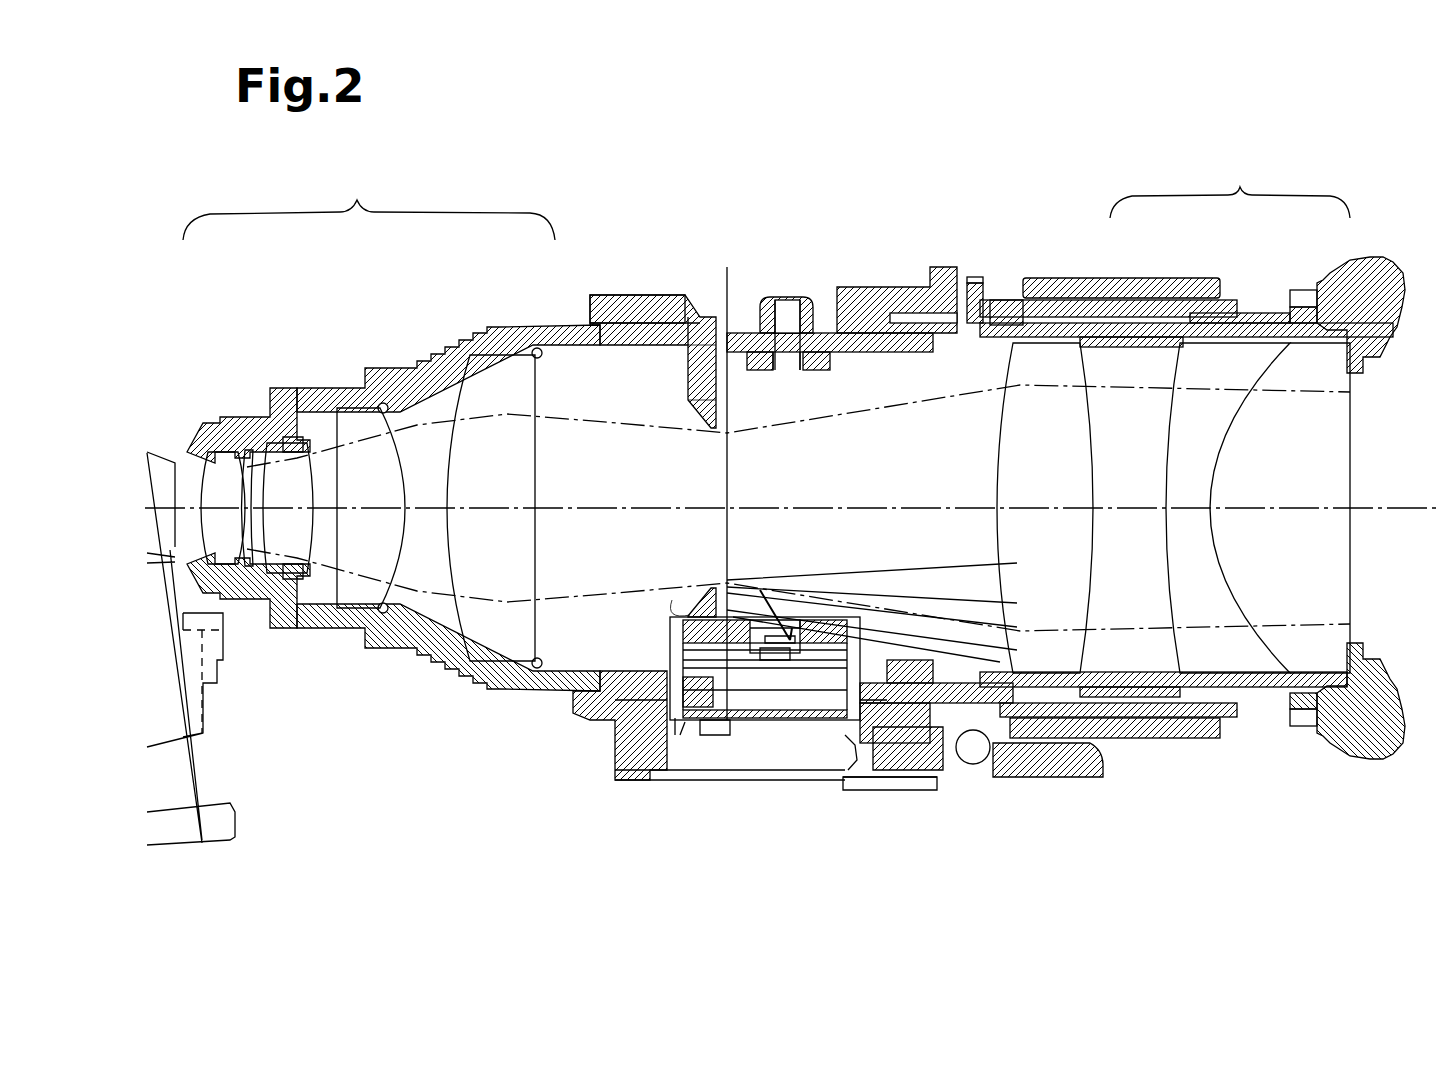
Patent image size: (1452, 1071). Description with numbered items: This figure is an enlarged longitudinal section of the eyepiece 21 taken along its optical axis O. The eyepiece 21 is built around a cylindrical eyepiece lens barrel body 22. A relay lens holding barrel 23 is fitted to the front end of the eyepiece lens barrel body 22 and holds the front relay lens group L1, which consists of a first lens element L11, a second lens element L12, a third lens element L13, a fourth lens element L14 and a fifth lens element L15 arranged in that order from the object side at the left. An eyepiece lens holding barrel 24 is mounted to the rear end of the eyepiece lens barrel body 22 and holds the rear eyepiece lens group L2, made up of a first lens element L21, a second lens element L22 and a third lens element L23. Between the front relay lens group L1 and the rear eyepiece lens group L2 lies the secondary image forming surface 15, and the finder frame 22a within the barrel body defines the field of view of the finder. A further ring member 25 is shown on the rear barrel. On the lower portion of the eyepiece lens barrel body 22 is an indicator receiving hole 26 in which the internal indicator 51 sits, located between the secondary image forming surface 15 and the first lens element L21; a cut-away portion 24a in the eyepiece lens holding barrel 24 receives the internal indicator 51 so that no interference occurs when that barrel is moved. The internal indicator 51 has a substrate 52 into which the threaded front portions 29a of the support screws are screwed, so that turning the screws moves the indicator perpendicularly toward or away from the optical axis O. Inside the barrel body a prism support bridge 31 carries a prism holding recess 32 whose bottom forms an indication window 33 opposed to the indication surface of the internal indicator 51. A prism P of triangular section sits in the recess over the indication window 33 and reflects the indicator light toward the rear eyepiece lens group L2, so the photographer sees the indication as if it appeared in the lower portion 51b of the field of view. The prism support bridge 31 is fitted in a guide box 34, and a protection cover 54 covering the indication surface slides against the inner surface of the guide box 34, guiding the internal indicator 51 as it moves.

The optical axis O is at (1396, 500).
The front relay lens group L1 is at (369, 195).
The first lens element L11 is at (220, 470).
The second lens element L12 is at (240, 478).
The third lens element L13 is at (287, 480).
The fourth lens element L14 is at (360, 430).
The fifth lens element L15 is at (513, 385).
The rear eyepiece lens group L2 is at (1230, 189).
The first lens element L21 is at (1063, 370).
The second lens element L22 is at (1247, 357).
The third lens element L23 is at (1307, 377).
The secondary image forming surface 15 is at (727, 300).
The eyepiece 21 is at (795, 255).
The eyepiece lens barrel body 22 is at (888, 295).
The finder frame 22a is at (696, 392).
The relay lens holding barrel 23 is at (560, 323).
The eyepiece lens holding barrel 24 is at (975, 290).
The cut-away portion 24a is at (880, 632).
The rear lens frame 25 is at (1060, 280).
The indicator receiving hole 26 is at (818, 760).
The threaded front portion 29a is at (686, 738).
The prism support bridge 31 is at (833, 705).
The prism holding recess 32 is at (808, 640).
The indication window 33 is at (770, 630).
The guide box 34 is at (617, 727).
The internal indicator 51 is at (760, 718).
The lower portion of the field of view 51b is at (738, 630).
The substrate 52 is at (783, 722).
The protection cover 54 is at (680, 730).
The prism P is at (800, 585).